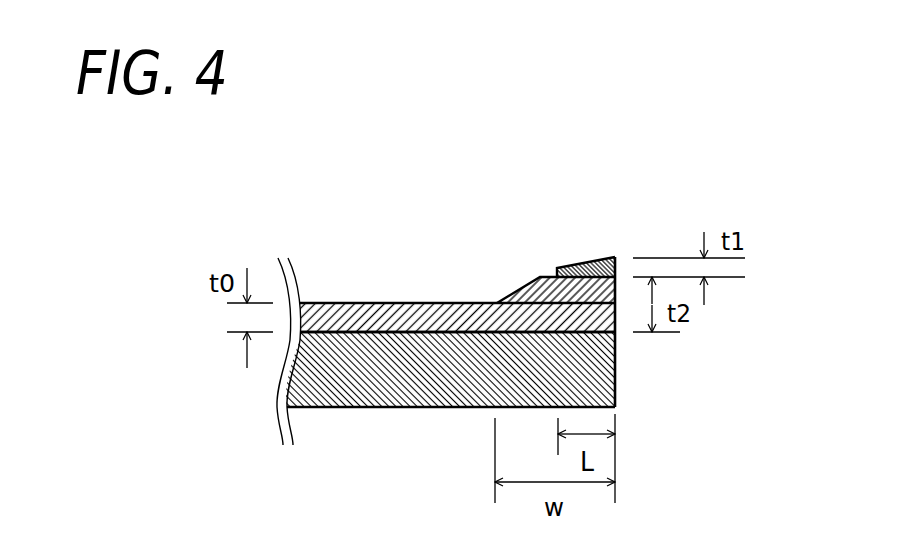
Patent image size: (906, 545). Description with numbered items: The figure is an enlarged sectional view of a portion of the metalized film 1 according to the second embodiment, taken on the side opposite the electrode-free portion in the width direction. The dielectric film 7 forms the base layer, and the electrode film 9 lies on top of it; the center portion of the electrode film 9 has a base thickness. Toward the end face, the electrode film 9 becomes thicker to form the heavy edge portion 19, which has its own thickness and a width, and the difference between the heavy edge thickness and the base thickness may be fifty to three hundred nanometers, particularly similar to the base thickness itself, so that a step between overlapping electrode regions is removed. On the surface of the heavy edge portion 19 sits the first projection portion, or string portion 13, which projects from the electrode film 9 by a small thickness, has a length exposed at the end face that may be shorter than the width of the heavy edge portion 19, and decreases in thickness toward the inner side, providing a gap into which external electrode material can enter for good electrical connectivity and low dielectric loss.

The metalized film 1 is at (614, 228).
The dielectric film 7 is at (458, 370).
The electrode film 9 is at (397, 325).
The first projection portion (string portion) 13 is at (580, 264).
The heavy edge portion 19 is at (523, 288).